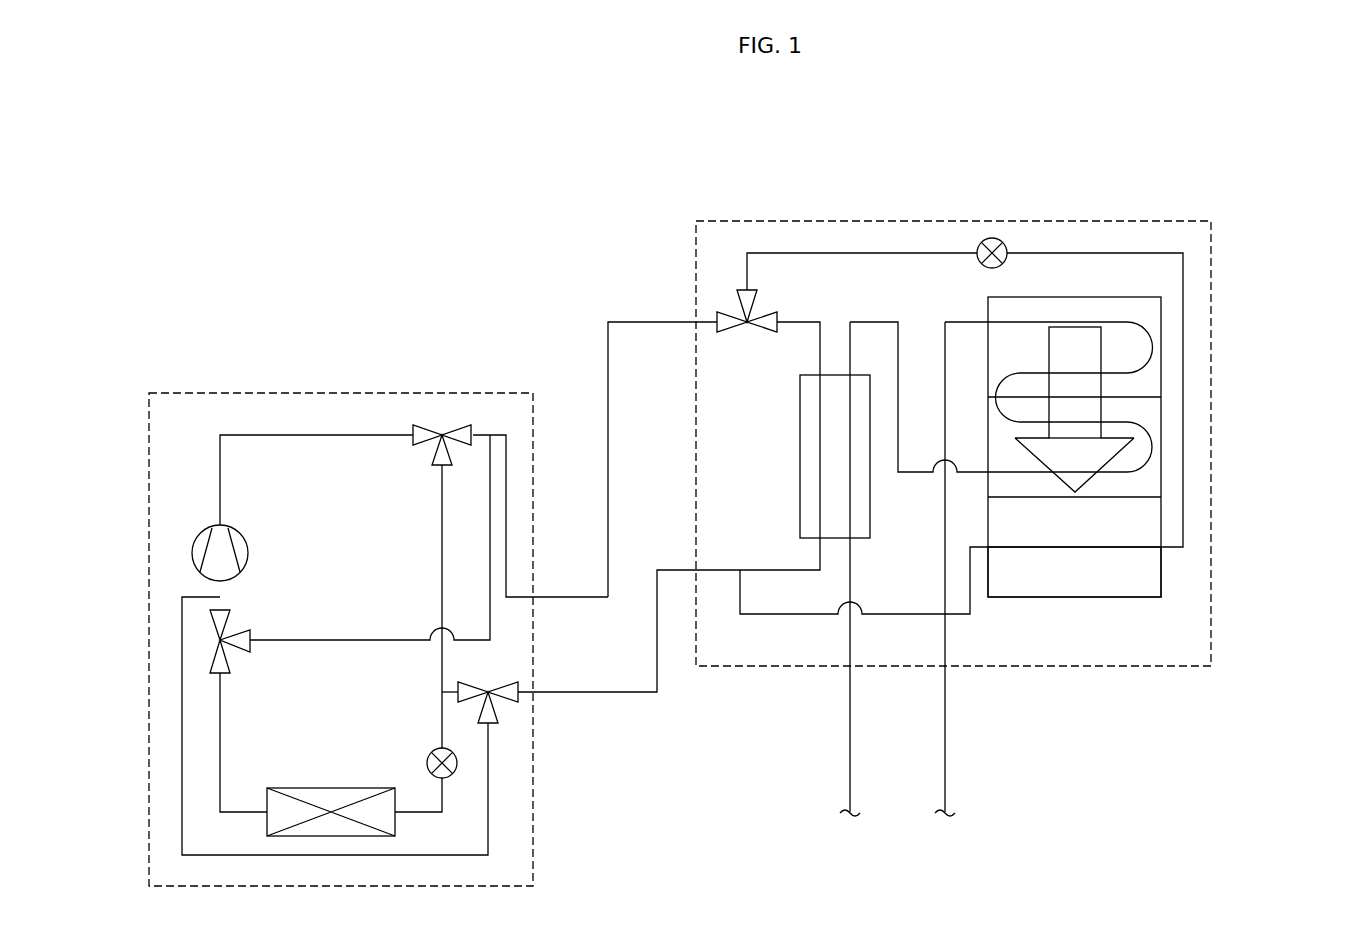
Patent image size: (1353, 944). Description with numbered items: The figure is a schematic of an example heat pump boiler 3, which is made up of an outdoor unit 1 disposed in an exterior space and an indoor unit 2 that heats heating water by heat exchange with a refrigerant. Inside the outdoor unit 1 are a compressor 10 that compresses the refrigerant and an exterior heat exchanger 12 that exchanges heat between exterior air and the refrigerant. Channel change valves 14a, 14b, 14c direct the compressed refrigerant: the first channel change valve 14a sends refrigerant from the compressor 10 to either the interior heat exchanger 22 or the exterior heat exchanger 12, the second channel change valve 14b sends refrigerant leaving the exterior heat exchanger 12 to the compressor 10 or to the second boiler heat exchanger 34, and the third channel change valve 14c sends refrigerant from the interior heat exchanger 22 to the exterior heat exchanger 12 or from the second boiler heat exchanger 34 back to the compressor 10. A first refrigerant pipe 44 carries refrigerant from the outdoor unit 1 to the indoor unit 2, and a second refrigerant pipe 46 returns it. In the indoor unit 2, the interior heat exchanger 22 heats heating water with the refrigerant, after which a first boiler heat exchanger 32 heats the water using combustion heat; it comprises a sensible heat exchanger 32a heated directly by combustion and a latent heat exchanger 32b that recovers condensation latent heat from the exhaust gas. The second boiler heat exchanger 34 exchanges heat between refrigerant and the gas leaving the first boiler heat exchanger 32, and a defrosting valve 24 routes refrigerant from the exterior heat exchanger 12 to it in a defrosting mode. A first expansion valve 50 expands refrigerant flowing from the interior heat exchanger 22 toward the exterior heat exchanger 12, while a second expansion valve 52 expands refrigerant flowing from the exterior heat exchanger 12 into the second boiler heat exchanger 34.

The outdoor unit 1 is at (186, 393).
The indoor unit 2 is at (735, 221).
The heat pump boiler 3 is at (1134, 294).
The compressor 10 is at (205, 532).
The exterior heat exchanger 12 is at (366, 788).
The first channel change valve 14a is at (428, 425).
The second channel change valve 14b is at (233, 632).
The third channel change valve 14c is at (500, 711).
The interior heat exchanger 22 is at (800, 470).
The defrosting valve 24 is at (760, 318).
The first boiler heat exchanger 32 is at (1134, 397).
The sensible heat exchanger 32a is at (1153, 343).
The latent heat exchanger 32b is at (1153, 440).
The second boiler heat exchanger 34 is at (1137, 546).
The first refrigerant pipe 44 is at (607, 362).
The second refrigerant pipe 46 is at (610, 692).
The first expansion valve 50 is at (457, 763).
The second expansion valve 52 is at (993, 237).